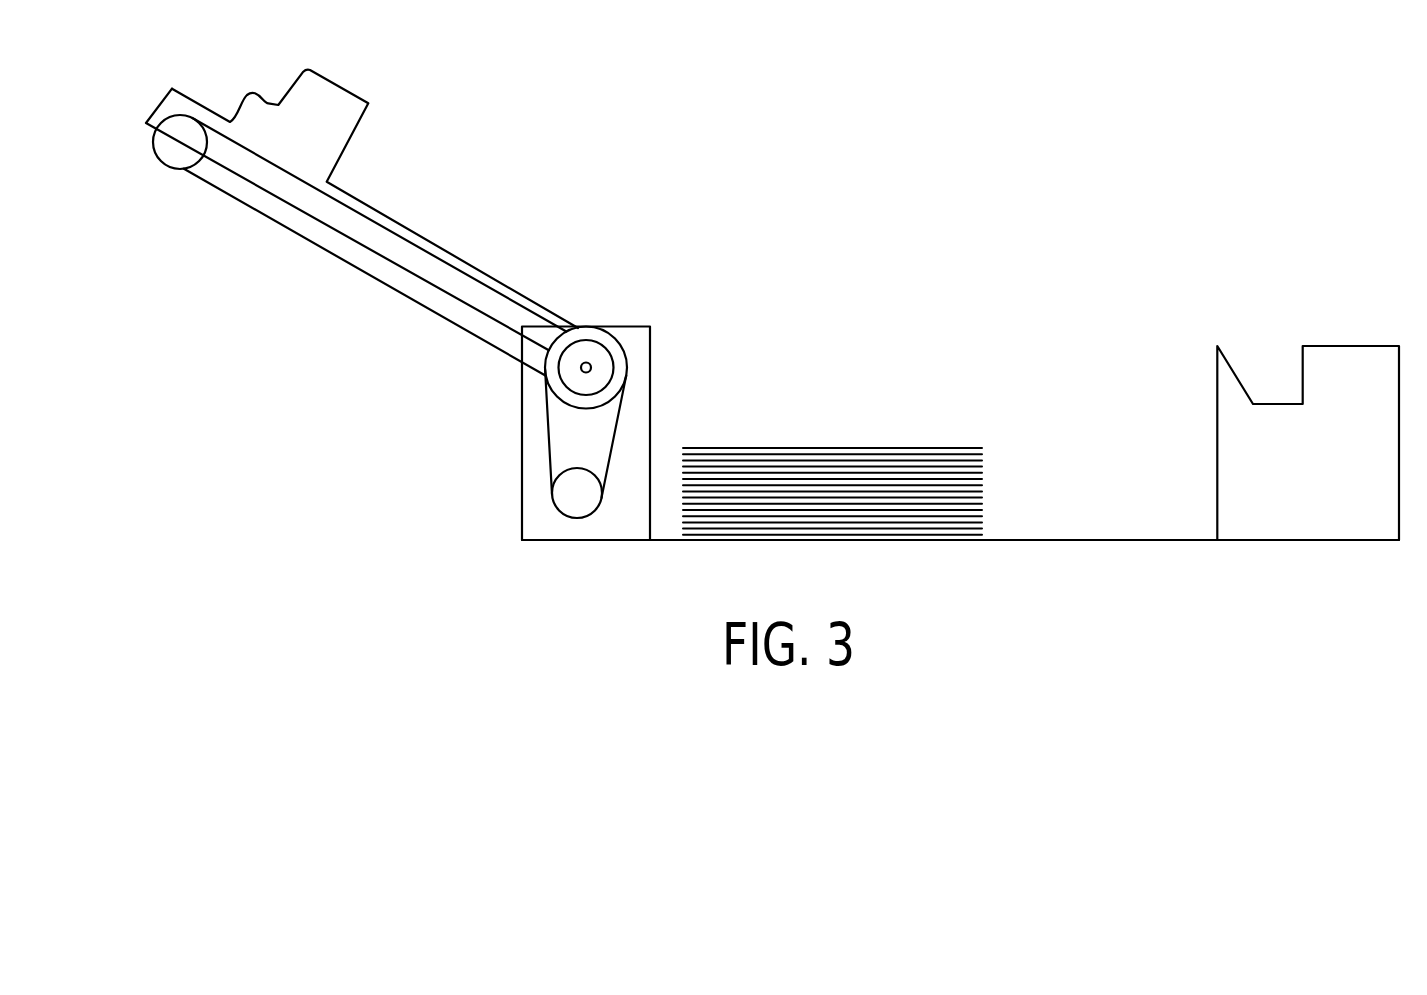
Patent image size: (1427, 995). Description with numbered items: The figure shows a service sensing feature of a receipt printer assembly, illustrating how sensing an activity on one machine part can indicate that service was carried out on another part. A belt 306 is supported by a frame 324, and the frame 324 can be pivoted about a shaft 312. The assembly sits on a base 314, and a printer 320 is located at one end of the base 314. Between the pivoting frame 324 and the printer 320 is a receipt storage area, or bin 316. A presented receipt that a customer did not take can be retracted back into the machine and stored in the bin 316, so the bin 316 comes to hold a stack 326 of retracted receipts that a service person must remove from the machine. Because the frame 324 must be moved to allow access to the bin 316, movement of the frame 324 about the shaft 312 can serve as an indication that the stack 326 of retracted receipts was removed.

The belt 306 is at (290, 231).
The shaft 312 is at (587, 360).
The base 314 is at (1043, 542).
The receipt storage area 316 is at (1087, 382).
The printer 320 is at (1327, 477).
The frame 324 is at (412, 274).
The stack 326 is at (850, 447).